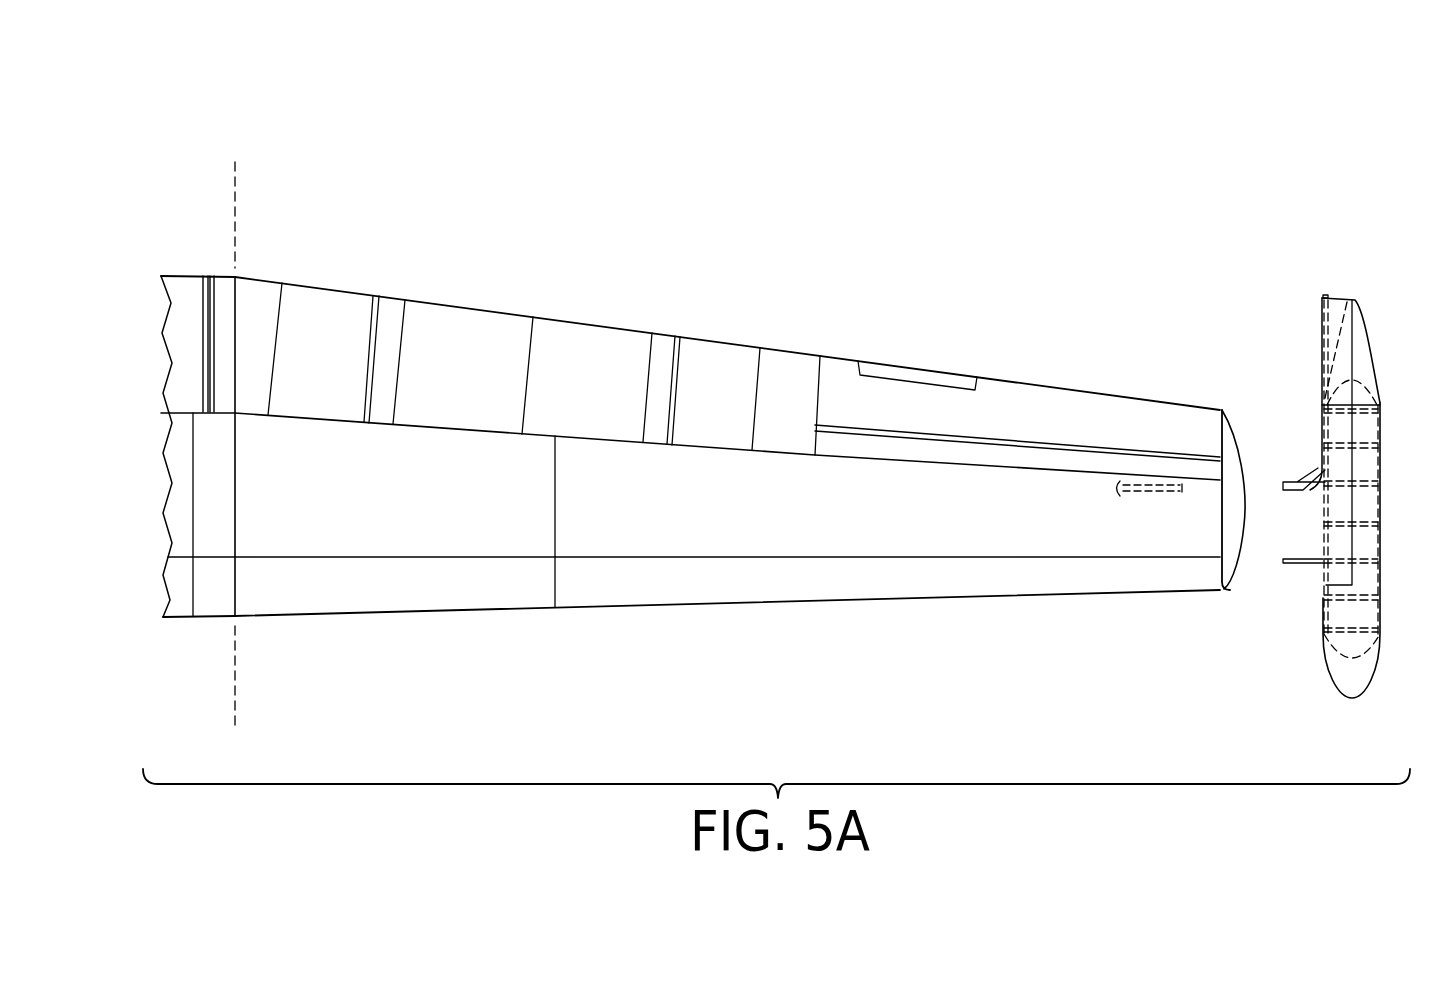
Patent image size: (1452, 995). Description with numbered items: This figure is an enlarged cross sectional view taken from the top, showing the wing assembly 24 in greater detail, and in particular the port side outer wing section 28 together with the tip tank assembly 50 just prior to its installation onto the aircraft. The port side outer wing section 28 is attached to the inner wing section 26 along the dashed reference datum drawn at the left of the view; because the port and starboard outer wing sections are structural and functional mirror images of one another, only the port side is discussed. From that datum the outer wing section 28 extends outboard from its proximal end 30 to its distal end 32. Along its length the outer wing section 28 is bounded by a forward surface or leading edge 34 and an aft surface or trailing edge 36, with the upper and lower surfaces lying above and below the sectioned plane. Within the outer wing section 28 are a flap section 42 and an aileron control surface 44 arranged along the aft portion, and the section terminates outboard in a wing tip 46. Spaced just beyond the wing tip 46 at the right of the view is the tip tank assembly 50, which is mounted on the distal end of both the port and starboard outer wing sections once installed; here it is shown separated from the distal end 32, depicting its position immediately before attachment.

The wing assembly 24 is at (273, 250).
The inner wing section 26 is at (173, 624).
The port side outer wing section 28 is at (530, 624).
The proximal end 30 is at (254, 518).
The distal end 32 is at (1208, 520).
The leading edge 34 is at (1031, 596).
The trailing edge 36 is at (803, 352).
The flap section 42 is at (468, 330).
The aileron control surface 44 is at (1045, 408).
The wing tip 46 is at (1235, 542).
The tip tank assembly 50 is at (1377, 339).